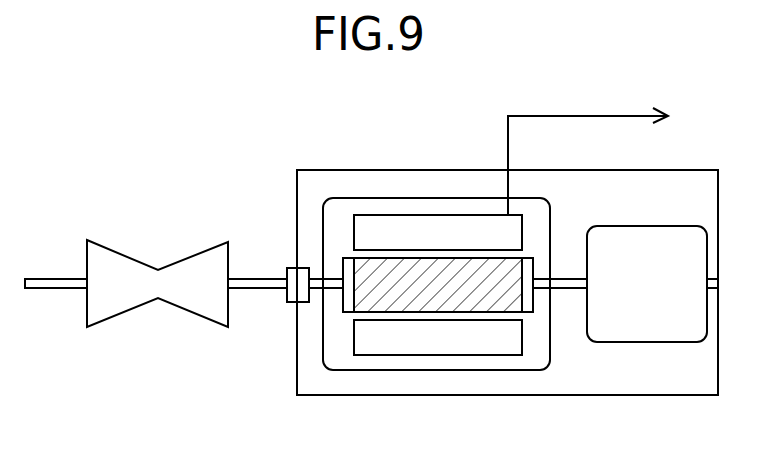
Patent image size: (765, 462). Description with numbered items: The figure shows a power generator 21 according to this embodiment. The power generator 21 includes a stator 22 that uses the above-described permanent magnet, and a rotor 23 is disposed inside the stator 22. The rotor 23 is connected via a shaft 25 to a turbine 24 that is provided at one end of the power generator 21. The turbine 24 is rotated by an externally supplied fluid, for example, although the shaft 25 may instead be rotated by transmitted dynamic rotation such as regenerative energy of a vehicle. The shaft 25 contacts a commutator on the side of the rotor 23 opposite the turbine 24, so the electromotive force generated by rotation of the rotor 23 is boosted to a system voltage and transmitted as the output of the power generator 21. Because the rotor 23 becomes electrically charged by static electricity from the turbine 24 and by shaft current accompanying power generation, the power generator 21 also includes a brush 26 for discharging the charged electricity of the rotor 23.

The power generator 21 is at (342, 170).
The stator 22 is at (407, 345).
The rotor 23 is at (452, 303).
The turbine 24 is at (197, 250).
The shaft 25 is at (263, 290).
The brush 26 is at (638, 328).